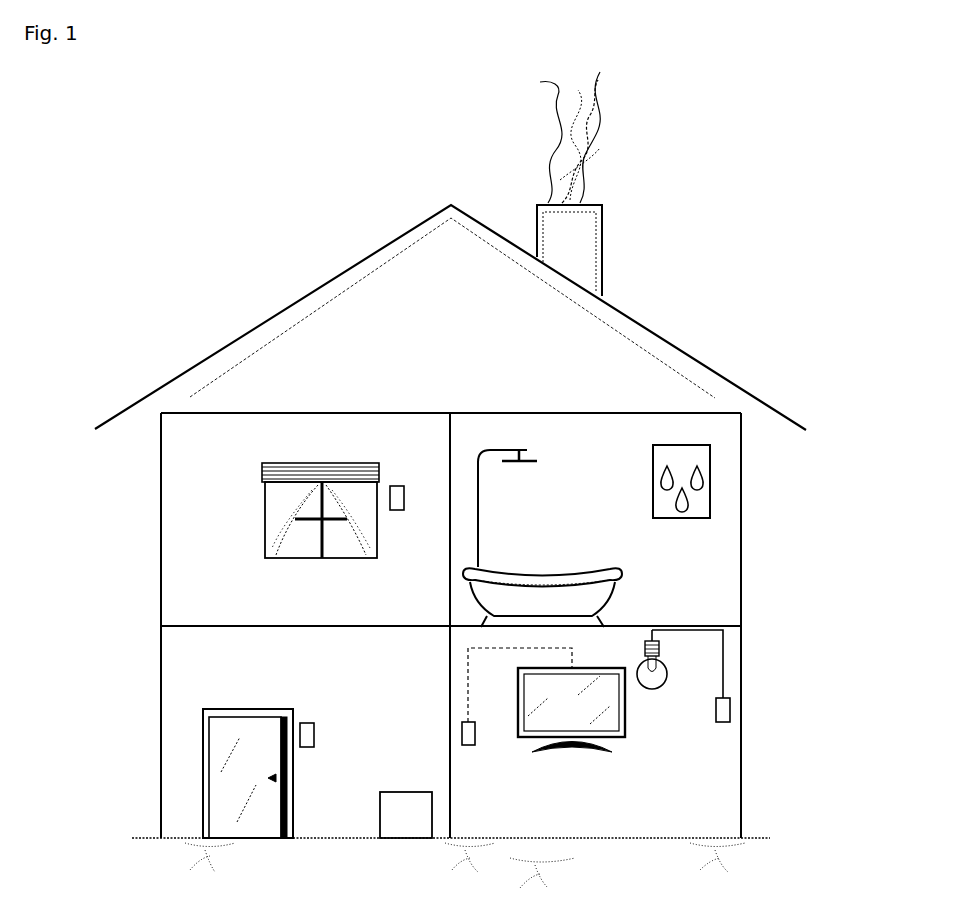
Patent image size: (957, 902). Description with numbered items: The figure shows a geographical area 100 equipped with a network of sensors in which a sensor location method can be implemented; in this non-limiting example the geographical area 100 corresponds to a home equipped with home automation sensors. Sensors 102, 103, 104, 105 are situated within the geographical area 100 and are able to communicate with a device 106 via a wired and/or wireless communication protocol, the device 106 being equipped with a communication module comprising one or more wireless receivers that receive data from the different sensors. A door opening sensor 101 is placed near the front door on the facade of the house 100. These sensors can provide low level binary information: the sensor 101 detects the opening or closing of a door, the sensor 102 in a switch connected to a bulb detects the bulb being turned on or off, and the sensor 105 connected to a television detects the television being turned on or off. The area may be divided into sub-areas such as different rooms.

The geographical area 100 is at (743, 483).
The door opening sensor 101 is at (310, 723).
The sensor 102 is at (721, 722).
The sensor 103 is at (690, 518).
The sensor 104 is at (398, 486).
The sensor 105 is at (468, 745).
The device 106 is at (393, 790).